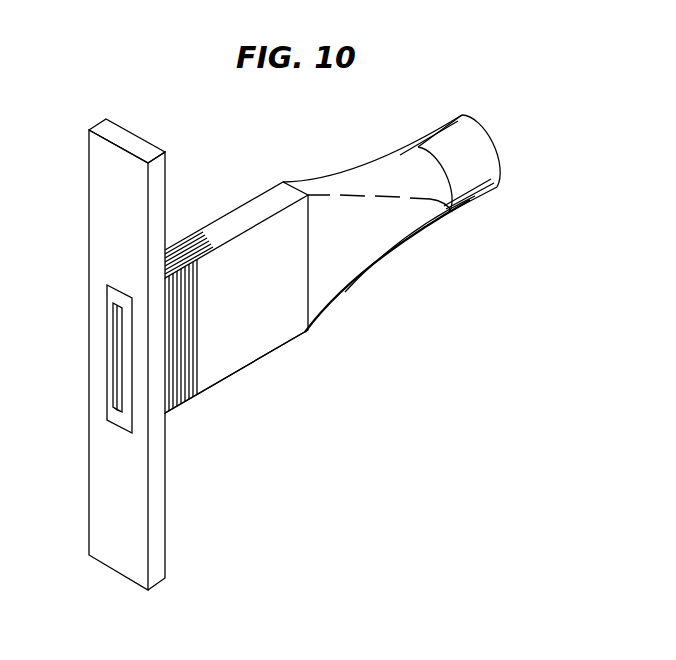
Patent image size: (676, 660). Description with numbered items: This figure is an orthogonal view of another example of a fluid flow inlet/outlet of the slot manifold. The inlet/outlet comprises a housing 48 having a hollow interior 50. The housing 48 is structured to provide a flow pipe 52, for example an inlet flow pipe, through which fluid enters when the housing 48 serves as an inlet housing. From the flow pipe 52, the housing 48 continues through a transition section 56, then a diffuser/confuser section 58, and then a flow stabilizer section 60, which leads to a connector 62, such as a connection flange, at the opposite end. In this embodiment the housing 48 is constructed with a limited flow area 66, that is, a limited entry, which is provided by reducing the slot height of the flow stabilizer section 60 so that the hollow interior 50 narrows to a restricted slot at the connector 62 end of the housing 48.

The housing 48 is at (245, 222).
The hollow interior 50 is at (120, 357).
The flow pipe 52 is at (480, 197).
The transition section 56 is at (416, 236).
The diffuser/confuser section 58 is at (345, 290).
The flow stabilizer section 60 is at (230, 367).
The connector 62 is at (128, 557).
The limited flow area 66 is at (117, 332).